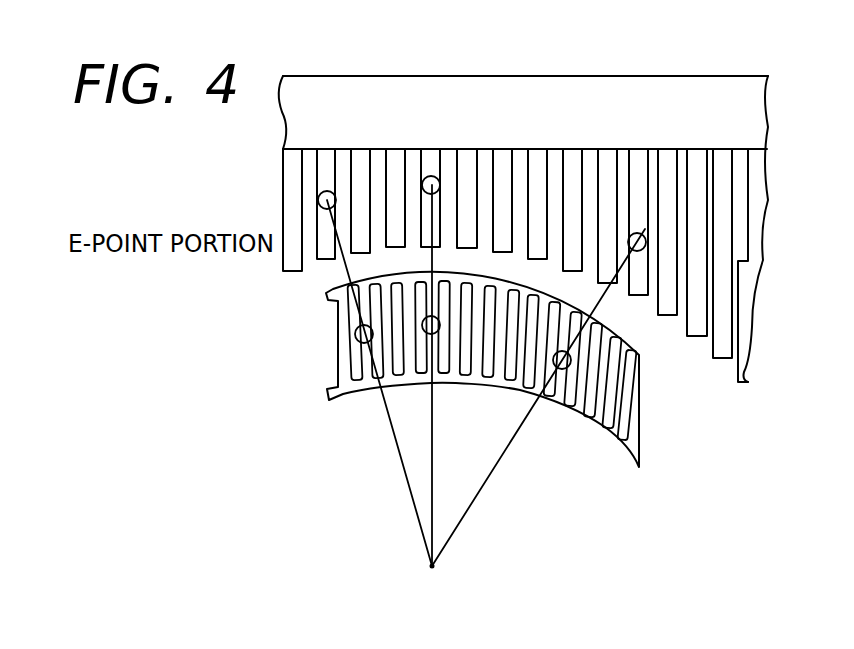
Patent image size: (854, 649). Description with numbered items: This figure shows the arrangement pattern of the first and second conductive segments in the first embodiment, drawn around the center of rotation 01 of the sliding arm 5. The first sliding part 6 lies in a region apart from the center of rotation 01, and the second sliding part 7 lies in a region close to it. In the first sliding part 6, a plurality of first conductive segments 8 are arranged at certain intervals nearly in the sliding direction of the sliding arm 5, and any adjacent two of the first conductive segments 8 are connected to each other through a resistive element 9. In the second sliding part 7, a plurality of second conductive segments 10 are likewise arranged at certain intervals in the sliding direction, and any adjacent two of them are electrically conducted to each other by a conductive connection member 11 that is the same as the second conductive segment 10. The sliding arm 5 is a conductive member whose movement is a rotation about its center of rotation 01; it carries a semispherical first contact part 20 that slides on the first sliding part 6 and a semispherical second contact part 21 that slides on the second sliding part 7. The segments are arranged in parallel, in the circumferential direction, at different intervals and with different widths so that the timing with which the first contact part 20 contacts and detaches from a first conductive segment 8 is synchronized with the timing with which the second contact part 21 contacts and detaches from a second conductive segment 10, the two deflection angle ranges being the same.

The sliding arm 5 is at (433, 432).
The first sliding part 6 is at (484, 206).
The second sliding part 7 is at (476, 381).
The first conductive segment 8 is at (603, 160).
The resistive element 9 is at (510, 93).
The second conductive segment 10 is at (583, 395).
The conductive connection member 11 is at (610, 333).
The first contact part 20 is at (327, 191).
The second contact part 21 is at (355, 334).
The center of rotation 01 is at (434, 569).